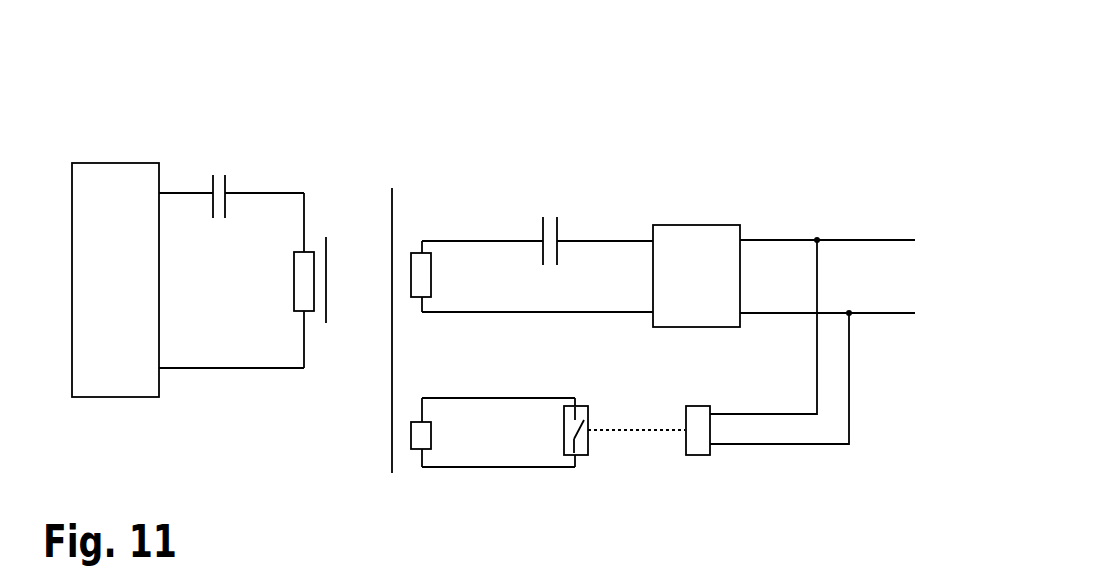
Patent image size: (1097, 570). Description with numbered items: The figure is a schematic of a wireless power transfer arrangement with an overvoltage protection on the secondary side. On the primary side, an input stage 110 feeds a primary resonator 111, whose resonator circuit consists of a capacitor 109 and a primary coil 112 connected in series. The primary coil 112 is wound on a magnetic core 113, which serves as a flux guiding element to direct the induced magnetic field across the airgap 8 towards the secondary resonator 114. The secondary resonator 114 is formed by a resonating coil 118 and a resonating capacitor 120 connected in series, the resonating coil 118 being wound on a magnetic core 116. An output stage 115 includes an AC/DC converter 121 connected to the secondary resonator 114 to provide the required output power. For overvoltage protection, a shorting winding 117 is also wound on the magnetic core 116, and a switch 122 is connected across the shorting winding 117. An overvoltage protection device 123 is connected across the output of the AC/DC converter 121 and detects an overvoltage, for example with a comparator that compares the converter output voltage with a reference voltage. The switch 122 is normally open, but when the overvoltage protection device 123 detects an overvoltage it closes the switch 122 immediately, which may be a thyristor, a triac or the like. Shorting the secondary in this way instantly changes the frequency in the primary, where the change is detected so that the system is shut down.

The airgap 8 is at (345, 335).
The capacitor 109 is at (217, 222).
The input stage 110 is at (115, 280).
The primary resonator 111 is at (247, 152).
The primary coil 112 is at (293, 283).
The magnetic core 113 is at (327, 227).
The secondary resonator 114 is at (513, 153).
The output stage 115 is at (702, 182).
The magnetic core 116 is at (393, 218).
The shorting winding 117 is at (432, 440).
The resonating coil 118 is at (432, 270).
The resonating capacitor 120 is at (552, 258).
The AC/DC converter 121 is at (696, 276).
The switch 122 is at (589, 421).
The overvoltage protection device 123 is at (718, 400).